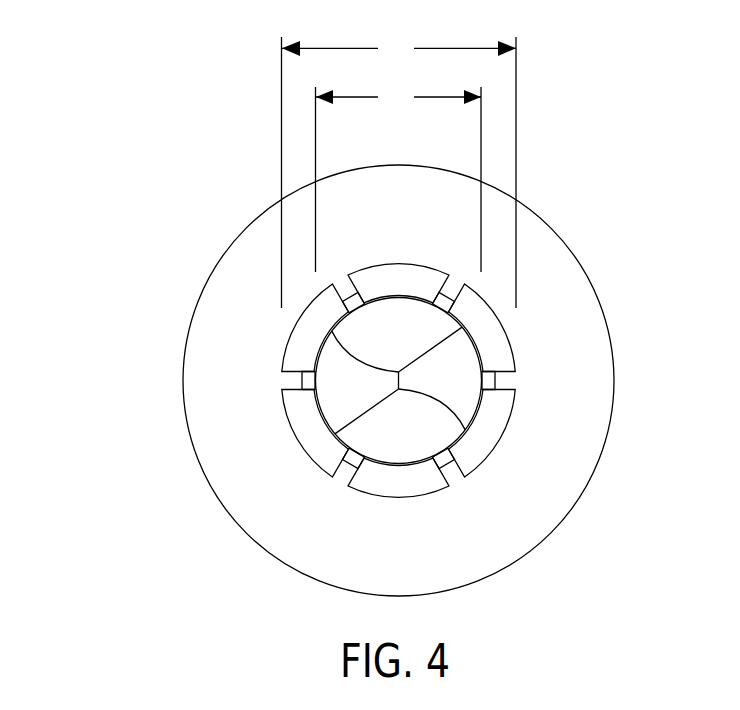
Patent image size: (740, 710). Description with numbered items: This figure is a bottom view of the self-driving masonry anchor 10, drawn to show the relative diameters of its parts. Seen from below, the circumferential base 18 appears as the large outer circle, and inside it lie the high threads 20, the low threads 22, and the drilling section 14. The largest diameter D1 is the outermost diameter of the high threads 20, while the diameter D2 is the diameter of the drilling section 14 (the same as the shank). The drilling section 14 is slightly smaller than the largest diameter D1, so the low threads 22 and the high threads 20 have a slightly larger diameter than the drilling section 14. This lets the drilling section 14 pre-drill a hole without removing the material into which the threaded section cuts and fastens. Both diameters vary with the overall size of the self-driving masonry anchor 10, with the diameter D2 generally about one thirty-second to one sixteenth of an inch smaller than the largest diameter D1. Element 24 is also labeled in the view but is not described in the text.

The self-driving masonry anchor 10 is at (128, 58).
The drilling section 14 is at (290, 421).
The circumferential base 18 is at (278, 560).
The high threads 20 is at (516, 400).
The low threads 22 is at (300, 382).
The central core 24 is at (430, 381).